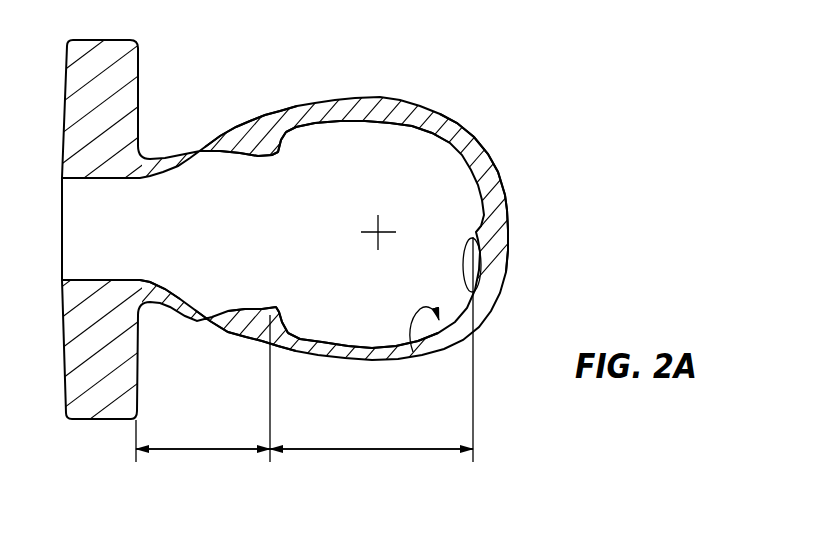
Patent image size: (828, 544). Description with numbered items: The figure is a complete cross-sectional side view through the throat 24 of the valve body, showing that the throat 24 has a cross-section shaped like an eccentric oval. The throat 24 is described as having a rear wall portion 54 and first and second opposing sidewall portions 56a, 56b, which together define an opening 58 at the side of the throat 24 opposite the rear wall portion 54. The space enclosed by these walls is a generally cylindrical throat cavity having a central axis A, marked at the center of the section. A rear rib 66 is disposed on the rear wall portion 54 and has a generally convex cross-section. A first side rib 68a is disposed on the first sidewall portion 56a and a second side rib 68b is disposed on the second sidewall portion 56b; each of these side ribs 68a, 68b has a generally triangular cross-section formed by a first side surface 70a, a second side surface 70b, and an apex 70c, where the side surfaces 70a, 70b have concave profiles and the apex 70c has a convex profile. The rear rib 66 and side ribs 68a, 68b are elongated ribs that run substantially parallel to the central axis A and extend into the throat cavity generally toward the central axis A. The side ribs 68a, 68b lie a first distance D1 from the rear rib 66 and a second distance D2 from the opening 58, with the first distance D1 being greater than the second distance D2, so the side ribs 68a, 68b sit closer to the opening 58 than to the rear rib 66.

The throat 24 is at (413, 352).
The rear wall portion 54 is at (480, 207).
The first sidewall portion 56a is at (349, 124).
The second sidewall portion 56b is at (342, 342).
The opening 58 is at (155, 280).
The rear rib 66 is at (481, 290).
The first side rib 68a is at (266, 142).
The second side rib 68b is at (262, 323).
The first side surface 70a is at (286, 143).
The second side surface 70b is at (253, 157).
The apex 70c is at (280, 156).
The central axis A is at (384, 242).
The first distance D1 is at (366, 450).
The second distance D2 is at (200, 450).